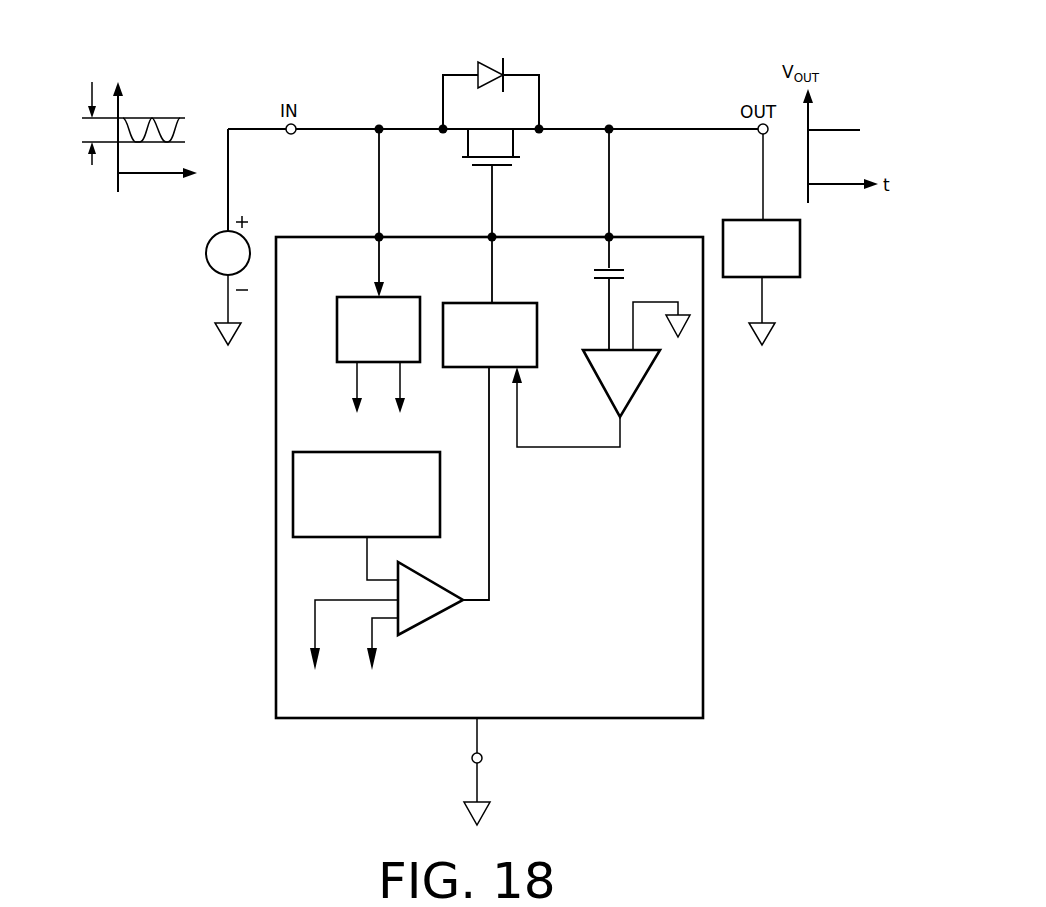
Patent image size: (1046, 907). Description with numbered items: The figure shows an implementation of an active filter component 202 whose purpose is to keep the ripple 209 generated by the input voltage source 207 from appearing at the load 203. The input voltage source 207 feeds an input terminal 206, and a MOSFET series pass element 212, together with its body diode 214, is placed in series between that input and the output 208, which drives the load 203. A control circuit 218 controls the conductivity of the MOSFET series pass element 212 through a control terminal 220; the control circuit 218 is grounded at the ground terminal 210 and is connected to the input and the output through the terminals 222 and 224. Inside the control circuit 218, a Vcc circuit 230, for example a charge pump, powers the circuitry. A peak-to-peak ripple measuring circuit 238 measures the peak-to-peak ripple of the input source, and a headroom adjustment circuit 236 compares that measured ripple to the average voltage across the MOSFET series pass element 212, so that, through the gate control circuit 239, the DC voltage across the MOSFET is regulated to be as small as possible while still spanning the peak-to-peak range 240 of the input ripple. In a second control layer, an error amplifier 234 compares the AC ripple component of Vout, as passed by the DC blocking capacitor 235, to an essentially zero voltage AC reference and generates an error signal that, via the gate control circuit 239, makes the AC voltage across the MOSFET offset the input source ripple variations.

The active filter component 202 is at (212, 536).
The load 203 is at (785, 278).
The input terminal 206 is at (291, 134).
The input voltage source 207 is at (217, 273).
The output 208 is at (760, 137).
The ripple 209 is at (163, 118).
The ground terminal 210 is at (470, 758).
The MOSFET series pass element 212 is at (505, 170).
The body diode 214 is at (490, 60).
The control circuit 218 is at (703, 520).
The control terminal 220 is at (490, 235).
The input terminal 222 is at (377, 235).
The output terminal 224 is at (611, 236).
The Vcc circuit 230 is at (352, 293).
The error amplifier 234 is at (597, 382).
The DC blocking capacitor 235 is at (620, 258).
The headroom adjustment circuit 236 is at (432, 623).
The peak-to-peak ripple measuring circuit 238 is at (440, 473).
The gate control circuit 239 is at (508, 302).
The peak-to-peak range 240 is at (86, 130).